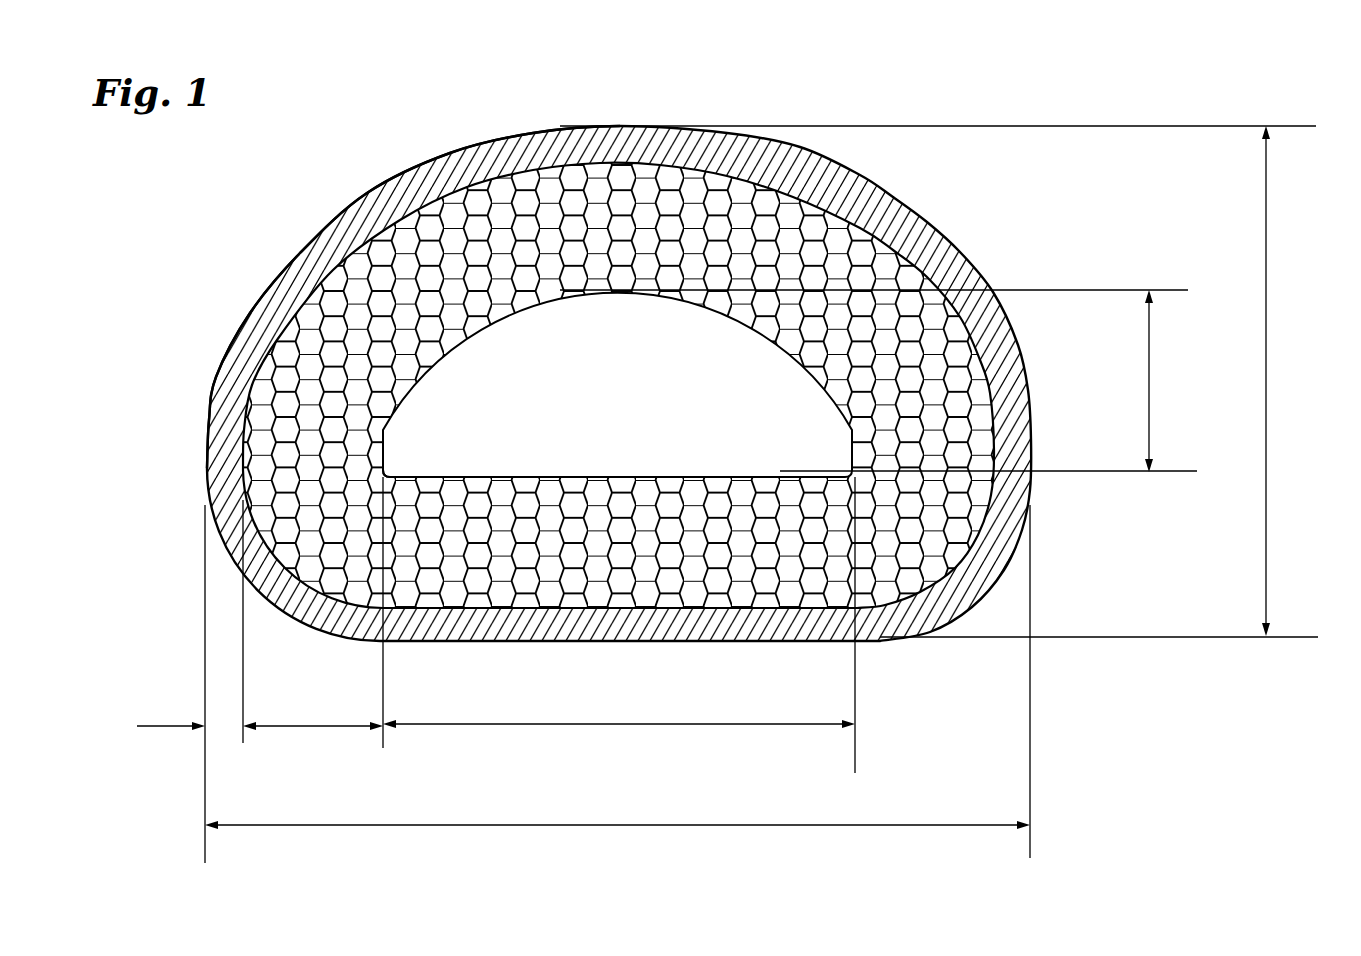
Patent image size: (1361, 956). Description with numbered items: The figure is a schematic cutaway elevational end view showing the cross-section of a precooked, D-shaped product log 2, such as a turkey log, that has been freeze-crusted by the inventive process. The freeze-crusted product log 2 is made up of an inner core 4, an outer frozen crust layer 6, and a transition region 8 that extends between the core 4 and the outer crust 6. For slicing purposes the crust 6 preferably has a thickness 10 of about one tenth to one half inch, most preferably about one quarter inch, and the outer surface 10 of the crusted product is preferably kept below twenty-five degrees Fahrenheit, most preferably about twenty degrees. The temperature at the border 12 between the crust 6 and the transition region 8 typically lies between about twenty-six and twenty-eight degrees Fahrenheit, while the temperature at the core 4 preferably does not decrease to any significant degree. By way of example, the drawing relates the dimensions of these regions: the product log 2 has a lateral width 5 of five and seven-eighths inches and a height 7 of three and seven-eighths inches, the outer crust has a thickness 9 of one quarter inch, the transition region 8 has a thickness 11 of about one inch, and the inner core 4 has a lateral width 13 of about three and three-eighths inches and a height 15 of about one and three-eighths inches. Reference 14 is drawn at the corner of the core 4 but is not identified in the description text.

The product log 2 is at (362, 178).
The inner core 4 is at (634, 404).
The lateral width 5 is at (562, 827).
The outer frozen crust layer 6 is at (325, 258).
The height 7 is at (1266, 229).
The transition region 8 is at (305, 380).
The outer crust thickness 9 is at (227, 727).
The outer surface 10 is at (245, 312).
The thickness of transition region 11 is at (305, 727).
The border 12 is at (258, 529).
The lateral width of inner core 13 is at (592, 725).
The cavity corner 14 is at (380, 460).
The height of inner core 15 is at (1149, 371).